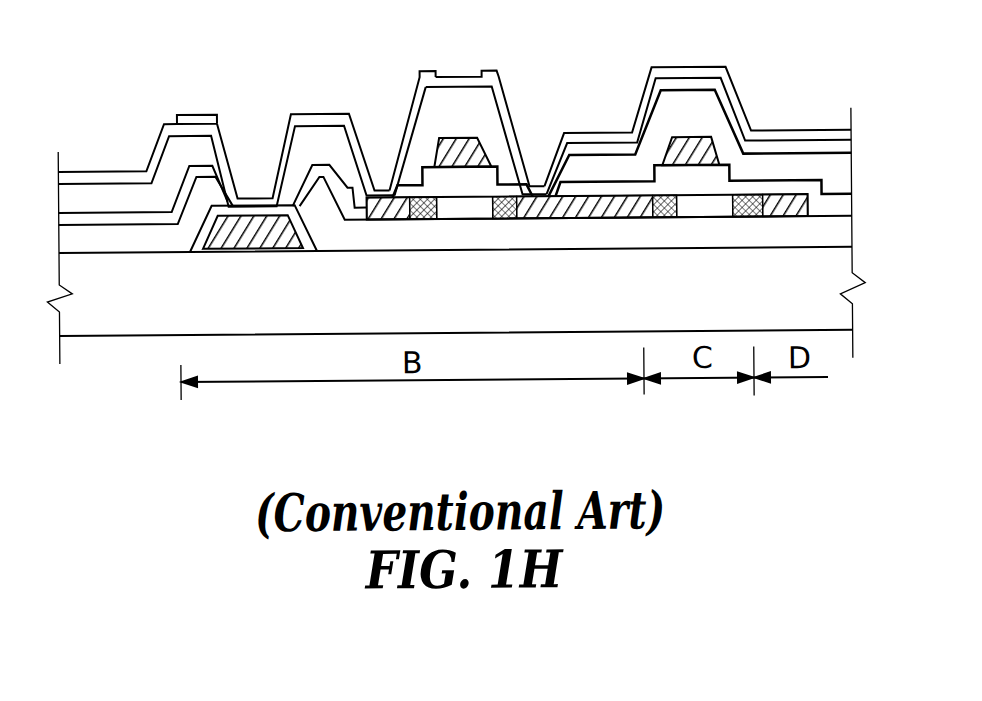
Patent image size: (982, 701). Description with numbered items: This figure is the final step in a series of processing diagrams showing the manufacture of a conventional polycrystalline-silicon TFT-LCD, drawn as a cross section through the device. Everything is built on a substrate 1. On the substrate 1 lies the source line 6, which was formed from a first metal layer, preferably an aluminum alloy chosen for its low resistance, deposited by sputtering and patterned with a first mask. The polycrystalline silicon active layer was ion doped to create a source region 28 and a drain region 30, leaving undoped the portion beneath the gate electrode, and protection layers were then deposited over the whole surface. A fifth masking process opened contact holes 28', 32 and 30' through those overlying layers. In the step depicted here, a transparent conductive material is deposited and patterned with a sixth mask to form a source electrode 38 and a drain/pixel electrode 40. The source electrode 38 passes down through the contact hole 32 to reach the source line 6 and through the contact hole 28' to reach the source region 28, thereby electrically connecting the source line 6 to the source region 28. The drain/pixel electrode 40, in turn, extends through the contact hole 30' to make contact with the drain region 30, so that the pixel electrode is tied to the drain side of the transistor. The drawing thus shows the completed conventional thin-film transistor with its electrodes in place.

The substrate 1 is at (456, 236).
The source line 6 is at (258, 255).
The source region 28 is at (575, 329).
The drain region 30 is at (587, 329).
The contact hole 28' is at (397, 127).
The contact hole 30' is at (688, 131).
The contact hole 32 is at (262, 126).
The source electrode 38 is at (203, 114).
The drain/pixel electrode 40 is at (498, 74).